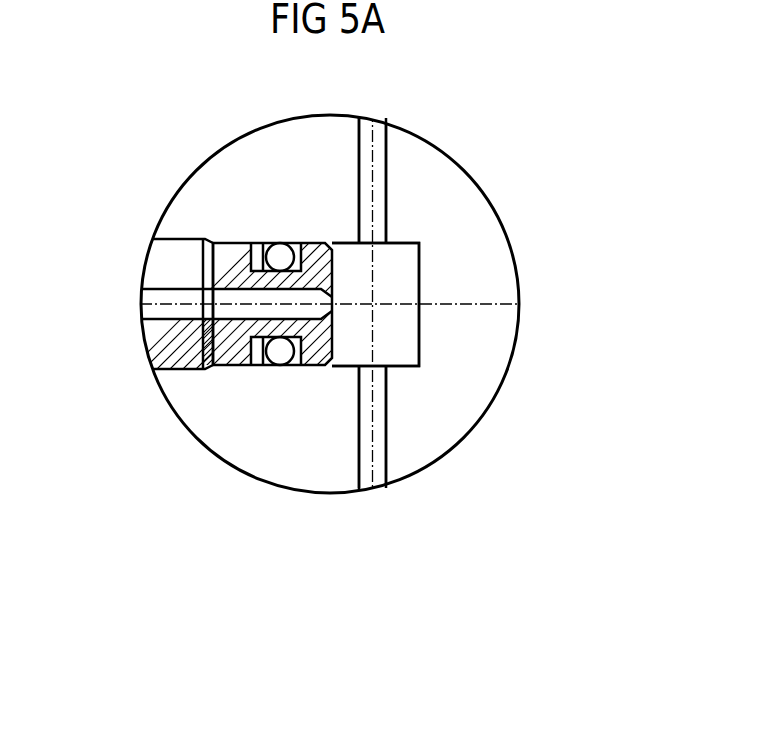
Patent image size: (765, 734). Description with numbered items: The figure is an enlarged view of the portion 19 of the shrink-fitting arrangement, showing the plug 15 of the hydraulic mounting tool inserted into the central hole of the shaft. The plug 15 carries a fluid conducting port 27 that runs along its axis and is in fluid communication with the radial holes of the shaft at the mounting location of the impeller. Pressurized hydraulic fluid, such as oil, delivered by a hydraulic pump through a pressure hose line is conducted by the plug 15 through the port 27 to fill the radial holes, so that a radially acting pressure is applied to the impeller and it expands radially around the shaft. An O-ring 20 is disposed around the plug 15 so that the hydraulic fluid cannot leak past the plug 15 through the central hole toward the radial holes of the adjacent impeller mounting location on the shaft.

The plug 15 is at (180, 263).
The portion 19 is at (502, 170).
The O-ring 20 is at (280, 255).
The fluid conducting port 27 is at (182, 306).